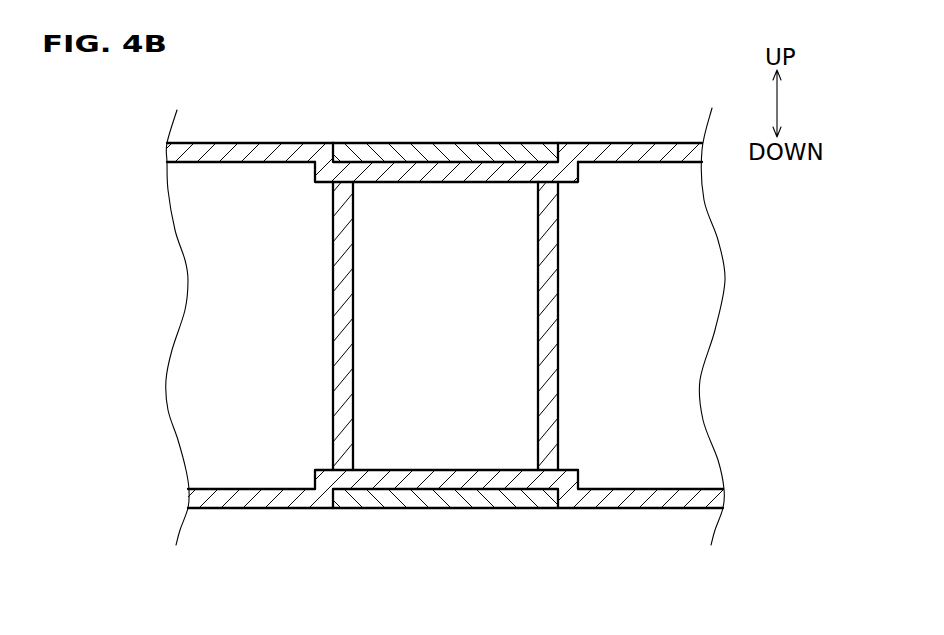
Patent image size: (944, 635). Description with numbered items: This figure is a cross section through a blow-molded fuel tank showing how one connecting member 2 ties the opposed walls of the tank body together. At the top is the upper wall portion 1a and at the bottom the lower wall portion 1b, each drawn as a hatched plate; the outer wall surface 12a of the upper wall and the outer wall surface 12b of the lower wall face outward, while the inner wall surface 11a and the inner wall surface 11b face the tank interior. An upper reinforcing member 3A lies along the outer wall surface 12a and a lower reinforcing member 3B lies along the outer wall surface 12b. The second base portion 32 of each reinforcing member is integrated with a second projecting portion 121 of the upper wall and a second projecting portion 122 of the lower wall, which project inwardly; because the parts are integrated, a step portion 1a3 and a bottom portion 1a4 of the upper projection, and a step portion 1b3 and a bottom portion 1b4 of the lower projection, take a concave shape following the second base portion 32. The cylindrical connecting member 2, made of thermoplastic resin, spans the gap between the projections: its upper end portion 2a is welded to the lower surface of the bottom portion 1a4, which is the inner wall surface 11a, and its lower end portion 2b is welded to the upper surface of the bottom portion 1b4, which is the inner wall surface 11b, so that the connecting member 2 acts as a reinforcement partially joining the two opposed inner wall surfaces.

The upper wall portion 1a is at (248, 146).
The lower wall portion 1b is at (260, 508).
The step portion 1a3 is at (316, 171).
The step portion 1b3 is at (313, 482).
The bottom portion 1a4 is at (480, 172).
The bottom portion 1b4 is at (478, 480).
The connecting member 2 is at (568, 323).
The upper end portion 2a is at (553, 175).
The lower end portion 2b is at (551, 481).
The upper reinforcing member 3A is at (498, 135).
The lower reinforcing member 3B is at (475, 512).
The second base portion 32 is at (400, 152).
The inner wall surface 11a is at (658, 173).
The inner wall surface 11b is at (708, 484).
The outer wall surface 12a is at (630, 132).
The outer wall surface 12b is at (623, 517).
The second projecting portion 121 is at (309, 190).
The second projecting portion 122 is at (315, 452).